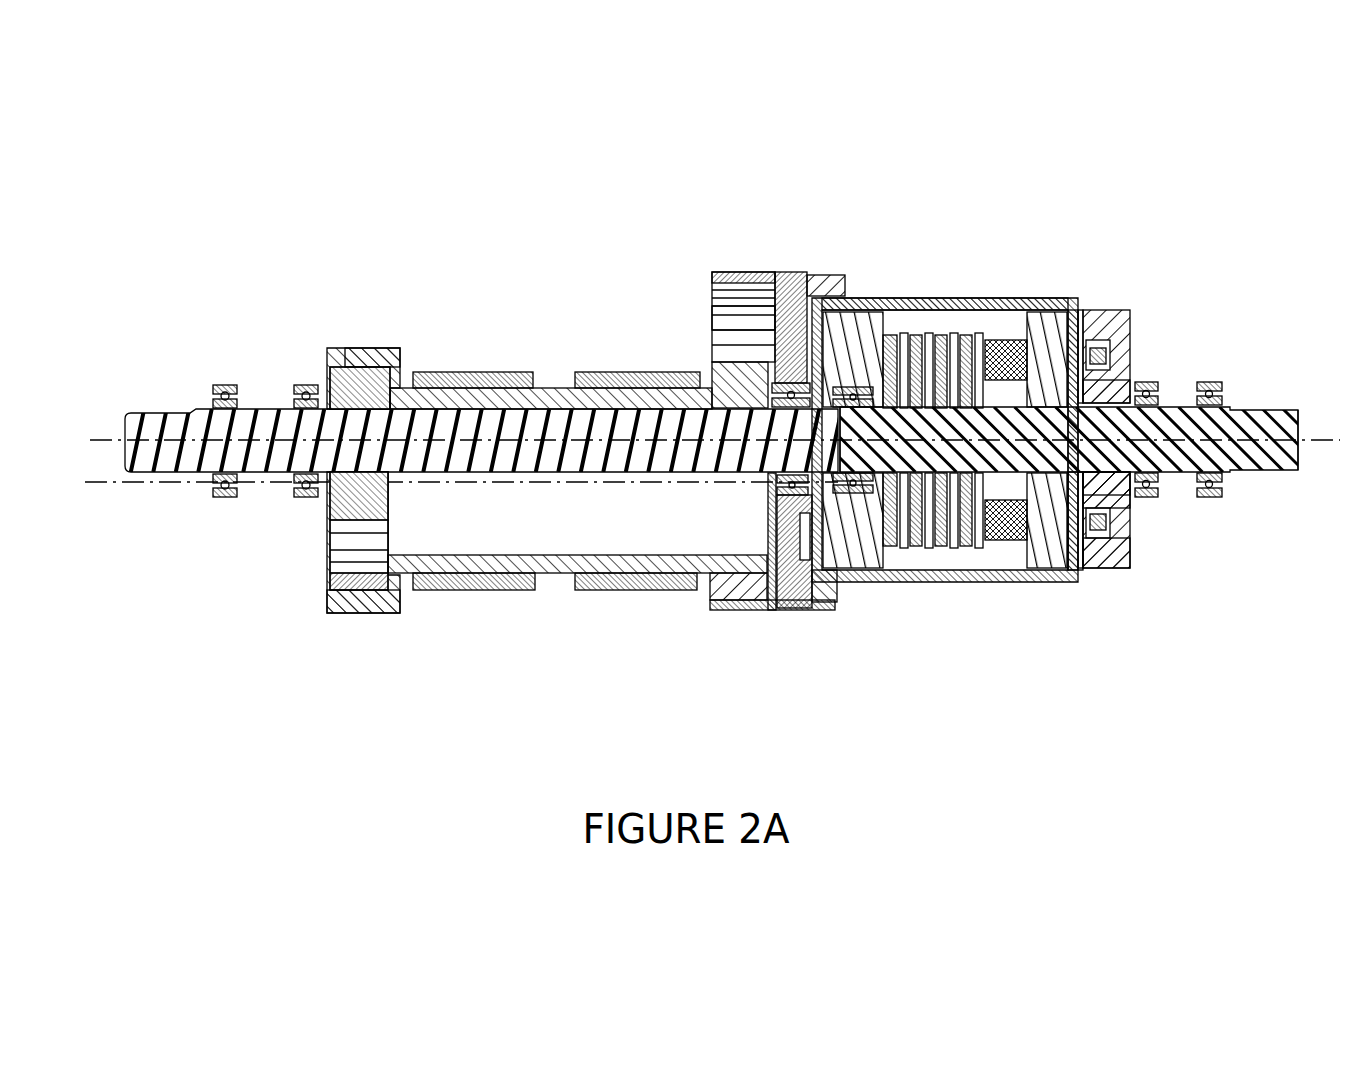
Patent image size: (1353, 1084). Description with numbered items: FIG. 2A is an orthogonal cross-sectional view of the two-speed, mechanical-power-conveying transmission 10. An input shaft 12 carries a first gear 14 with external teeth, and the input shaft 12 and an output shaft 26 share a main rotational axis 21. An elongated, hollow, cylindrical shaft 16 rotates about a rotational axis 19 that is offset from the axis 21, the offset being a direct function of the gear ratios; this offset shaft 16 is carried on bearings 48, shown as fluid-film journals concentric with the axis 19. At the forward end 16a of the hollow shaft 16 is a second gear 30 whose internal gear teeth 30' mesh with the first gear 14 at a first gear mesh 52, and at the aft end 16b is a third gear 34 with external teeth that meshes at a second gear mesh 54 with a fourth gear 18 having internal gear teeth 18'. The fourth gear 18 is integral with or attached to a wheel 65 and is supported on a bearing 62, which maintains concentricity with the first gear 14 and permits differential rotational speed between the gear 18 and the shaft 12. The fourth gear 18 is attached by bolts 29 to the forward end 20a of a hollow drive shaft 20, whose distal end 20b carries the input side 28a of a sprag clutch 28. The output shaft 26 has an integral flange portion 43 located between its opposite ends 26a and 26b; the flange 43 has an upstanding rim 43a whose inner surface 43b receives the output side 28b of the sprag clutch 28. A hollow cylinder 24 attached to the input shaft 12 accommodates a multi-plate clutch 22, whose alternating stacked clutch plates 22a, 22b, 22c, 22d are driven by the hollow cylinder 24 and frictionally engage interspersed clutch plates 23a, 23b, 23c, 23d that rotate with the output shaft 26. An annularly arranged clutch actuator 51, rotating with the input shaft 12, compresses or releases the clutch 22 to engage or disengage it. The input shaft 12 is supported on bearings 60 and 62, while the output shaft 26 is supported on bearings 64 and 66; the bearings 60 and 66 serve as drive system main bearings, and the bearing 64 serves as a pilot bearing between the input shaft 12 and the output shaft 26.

The two-speed mechanical-power-conveying transmission 10 is at (682, 220).
The input shaft 12 is at (150, 430).
The first gear 14 is at (336, 350).
The elongated hollow cylindrical shaft 16 is at (555, 575).
The forward end of cylindrical shaft 16a is at (330, 598).
The aft end of cylindrical shaft 16b is at (738, 612).
The fourth gear 18 is at (712, 296).
The internal gear teeth of fourth gear 18' is at (696, 290).
The rotational axis of cylindrical shaft 19 is at (168, 484).
The hollow drive shaft 20 is at (1023, 582).
The forward end of hollow drive shaft 20a is at (853, 298).
The distal end of hollow drive shaft 20b is at (1077, 563).
The main rotational axis 21 is at (97, 443).
The multi-plate clutch 22 is at (996, 302).
The clutch plate 22a is at (884, 545).
The clutch plate 22b is at (914, 545).
The clutch plate 22c is at (940, 545).
The clutch plate 22d is at (966, 545).
The interspersed clutch plate 23a is at (904, 548).
The interspersed clutch plate 23b is at (929, 548).
The interspersed clutch plate 23c is at (954, 548).
The interspersed clutch plate 23d is at (979, 548).
The hollow cylinder 24 is at (1088, 568).
The output shaft 26 is at (1265, 405).
The first end of output shaft 26a is at (838, 457).
The second end of output shaft 26b is at (1298, 475).
The sprag clutch 28 is at (1110, 522).
The input side of sprag clutch 28a is at (1132, 547).
The output side of sprag clutch 28b is at (1128, 570).
The bolts 29 is at (830, 275).
The second gear 30 is at (310, 559).
The internal gear teeth of second gear 30' is at (327, 465).
The third gear 34 is at (770, 385).
The flange portion 43 is at (1150, 320).
The upstanding rim 43a is at (1133, 318).
The inner surface of rim 43b is at (1163, 322).
The bearings 48 is at (610, 583).
The clutch actuator 51 is at (1078, 305).
The first gear mesh 52 is at (380, 348).
The second gear mesh 54 is at (745, 611).
The first bearing set 60 is at (288, 384).
The first single bearing 62 is at (745, 375).
The second single bearing 64 is at (893, 300).
The wheel 65 is at (760, 272).
The second bearing set 66 is at (1150, 381).